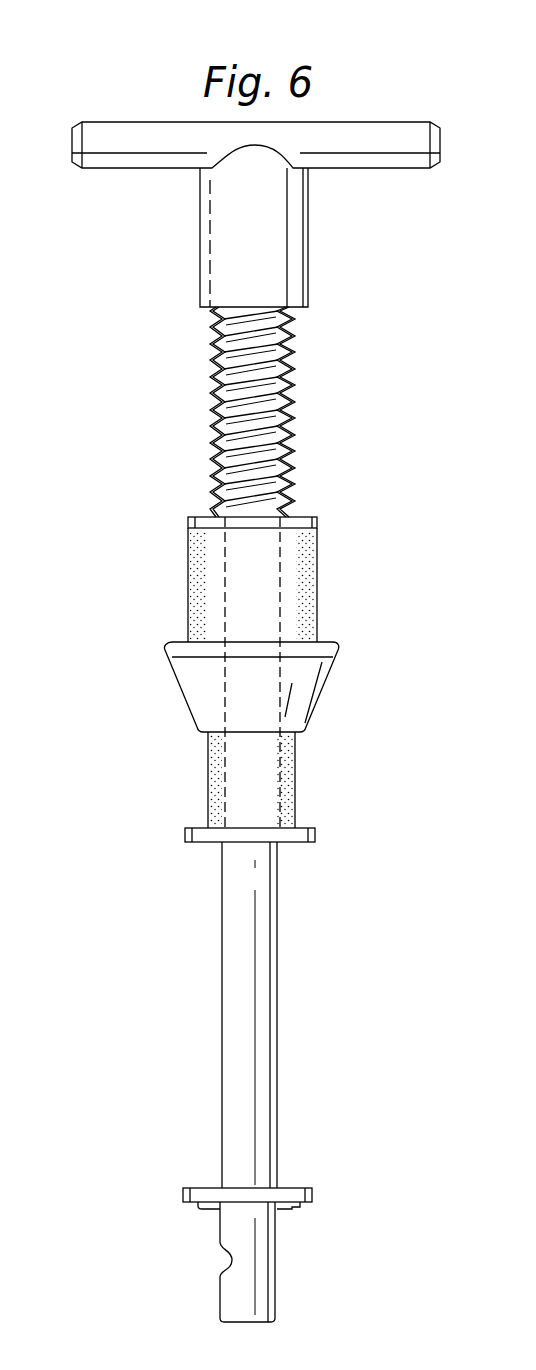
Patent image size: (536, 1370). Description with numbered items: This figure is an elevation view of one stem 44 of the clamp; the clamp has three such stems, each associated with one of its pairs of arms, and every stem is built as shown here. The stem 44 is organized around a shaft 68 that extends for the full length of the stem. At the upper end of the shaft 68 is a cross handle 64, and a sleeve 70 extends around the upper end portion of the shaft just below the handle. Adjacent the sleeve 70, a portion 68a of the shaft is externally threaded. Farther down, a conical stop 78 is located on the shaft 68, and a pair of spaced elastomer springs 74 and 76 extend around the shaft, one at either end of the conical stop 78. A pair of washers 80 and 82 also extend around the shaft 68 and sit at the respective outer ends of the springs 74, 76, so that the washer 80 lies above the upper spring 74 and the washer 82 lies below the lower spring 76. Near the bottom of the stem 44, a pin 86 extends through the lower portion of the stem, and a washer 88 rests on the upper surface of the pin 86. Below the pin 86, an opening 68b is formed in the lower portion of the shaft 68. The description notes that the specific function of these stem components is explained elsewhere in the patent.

The stem 44 is at (120, 62).
The cross handle 64 is at (385, 118).
The sleeve 70 is at (200, 240).
The externally threaded portion of the shaft 68a is at (210, 415).
The washer 80 is at (188, 521).
The elastomer spring 74 is at (317, 578).
The conical stop 78 is at (180, 690).
The elastomer spring 76 is at (208, 778).
The washer 82 is at (315, 835).
The shaft 68 is at (222, 1015).
The washer 88 is at (312, 1195).
The pin 86 is at (200, 1207).
The opening 68b is at (220, 1262).